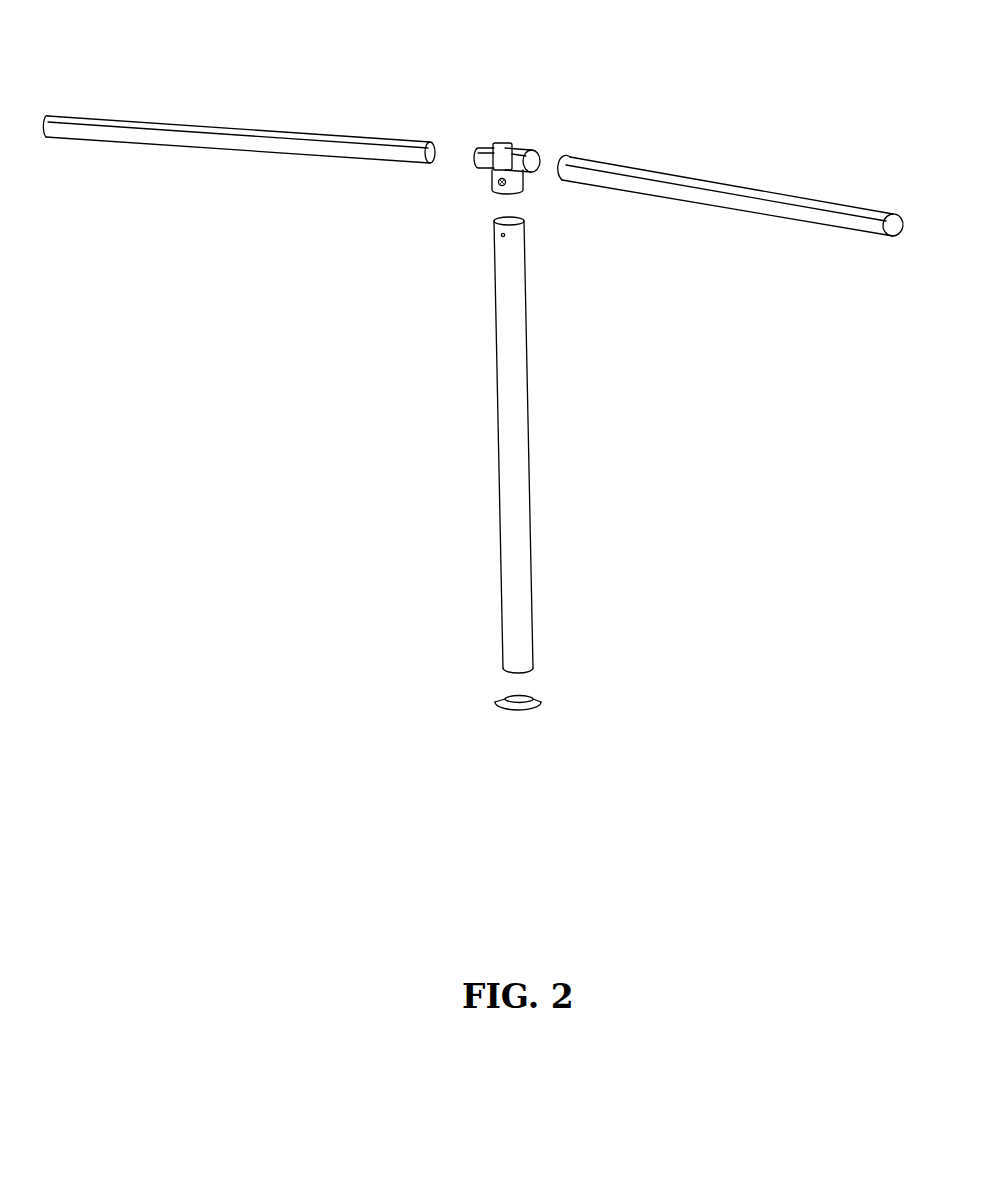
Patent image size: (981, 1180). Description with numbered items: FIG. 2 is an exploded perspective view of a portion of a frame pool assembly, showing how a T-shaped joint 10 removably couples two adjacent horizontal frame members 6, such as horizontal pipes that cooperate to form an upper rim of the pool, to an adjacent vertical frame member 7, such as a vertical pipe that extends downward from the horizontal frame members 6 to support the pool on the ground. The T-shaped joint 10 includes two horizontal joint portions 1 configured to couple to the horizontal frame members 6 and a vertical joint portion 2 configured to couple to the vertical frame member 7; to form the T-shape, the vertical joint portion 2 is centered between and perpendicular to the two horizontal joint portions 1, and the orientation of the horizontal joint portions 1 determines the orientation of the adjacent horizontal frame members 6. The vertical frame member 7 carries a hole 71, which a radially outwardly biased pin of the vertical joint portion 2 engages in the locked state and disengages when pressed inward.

The T-shaped joint 10 is at (505, 128).
The horizontal joint portion 1 is at (485, 153).
The vertical joint portion 2 is at (524, 185).
The horizontal frame member 6 is at (393, 150).
The vertical frame member 7 is at (511, 319).
The hole 71 is at (498, 236).